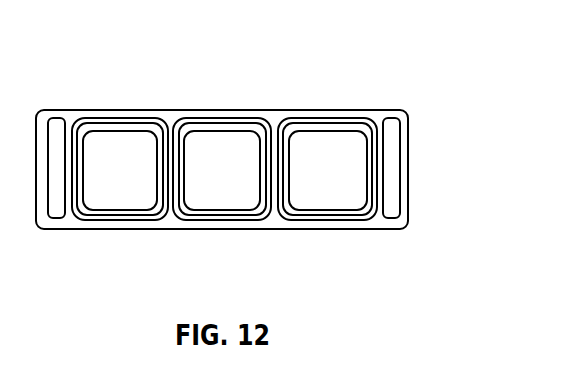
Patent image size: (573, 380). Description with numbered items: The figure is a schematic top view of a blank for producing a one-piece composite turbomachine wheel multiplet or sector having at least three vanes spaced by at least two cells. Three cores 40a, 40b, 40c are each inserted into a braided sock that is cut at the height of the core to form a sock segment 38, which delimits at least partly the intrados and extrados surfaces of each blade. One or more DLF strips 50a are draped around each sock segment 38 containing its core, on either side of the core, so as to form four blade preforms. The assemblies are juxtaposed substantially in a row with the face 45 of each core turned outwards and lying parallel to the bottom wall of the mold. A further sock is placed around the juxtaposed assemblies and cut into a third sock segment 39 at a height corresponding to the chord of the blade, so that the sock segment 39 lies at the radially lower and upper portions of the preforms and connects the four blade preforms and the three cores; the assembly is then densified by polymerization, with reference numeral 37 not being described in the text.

The chamber outer wall 37 is at (112, 120).
The sock segment 38 is at (256, 131).
The sock segment 39 is at (206, 110).
The core 40a is at (137, 150).
The core 40b is at (235, 150).
The core 40c is at (333, 152).
The face 45 is at (217, 188).
The DLF strip 50a is at (61, 128).